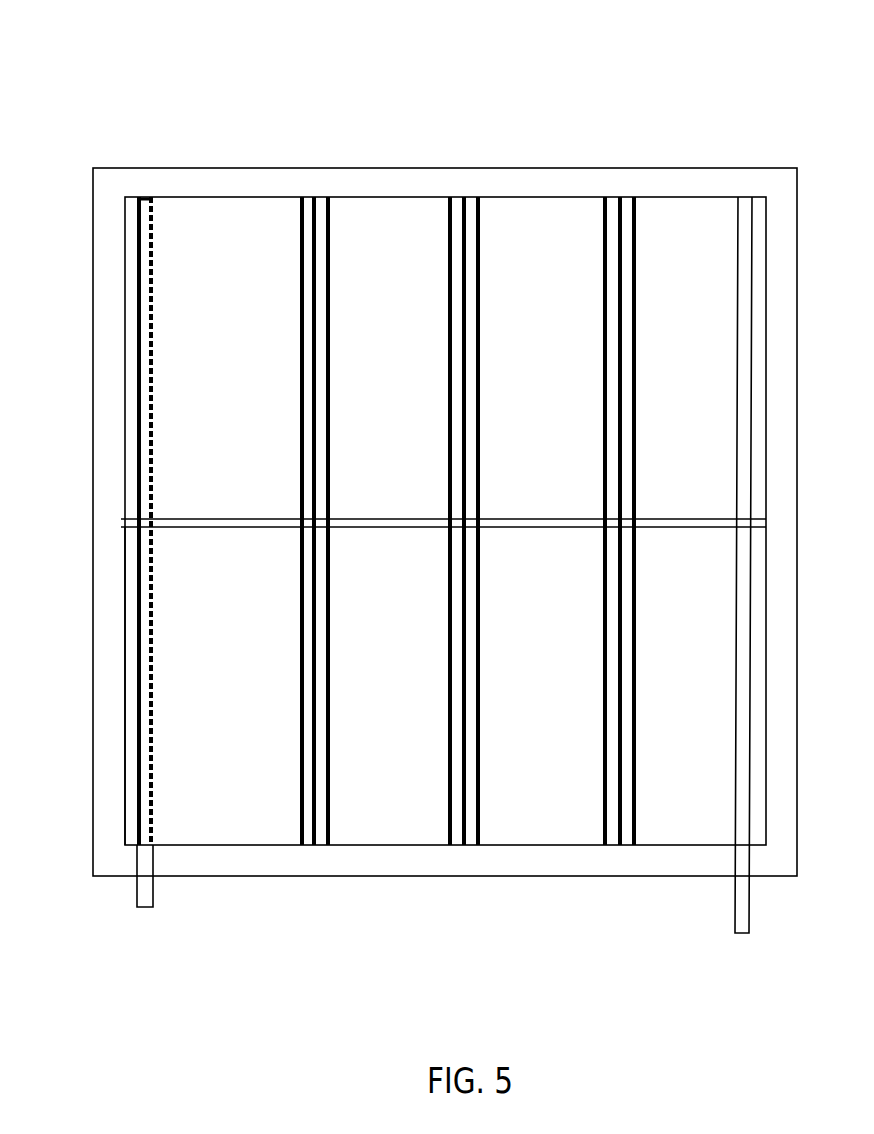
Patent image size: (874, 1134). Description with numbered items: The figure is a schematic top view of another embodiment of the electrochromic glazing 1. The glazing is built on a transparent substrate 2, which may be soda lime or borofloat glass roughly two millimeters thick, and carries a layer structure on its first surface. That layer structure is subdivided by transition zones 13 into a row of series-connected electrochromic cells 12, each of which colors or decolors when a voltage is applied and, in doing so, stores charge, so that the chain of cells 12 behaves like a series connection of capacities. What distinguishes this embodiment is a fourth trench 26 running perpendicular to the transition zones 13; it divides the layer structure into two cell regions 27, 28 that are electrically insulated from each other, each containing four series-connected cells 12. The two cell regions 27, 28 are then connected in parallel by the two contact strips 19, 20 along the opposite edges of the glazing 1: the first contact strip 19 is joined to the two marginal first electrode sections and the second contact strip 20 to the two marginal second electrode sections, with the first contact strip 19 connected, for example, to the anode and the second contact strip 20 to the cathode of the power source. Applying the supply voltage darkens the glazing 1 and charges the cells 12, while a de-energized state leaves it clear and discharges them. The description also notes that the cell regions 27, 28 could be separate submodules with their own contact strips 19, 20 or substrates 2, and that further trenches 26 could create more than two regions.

The electrochromic glazing 1 is at (190, 84).
The transparent substrate 2 is at (639, 172).
The electrochromic cells 12 is at (201, 351).
The transition zones 13 is at (322, 176).
The first contact strip 19 is at (137, 886).
The second contact strip 20 is at (735, 903).
The fourth trench 26 is at (240, 523).
The first cell region 27 is at (115, 260).
The second cell region 28 is at (114, 659).